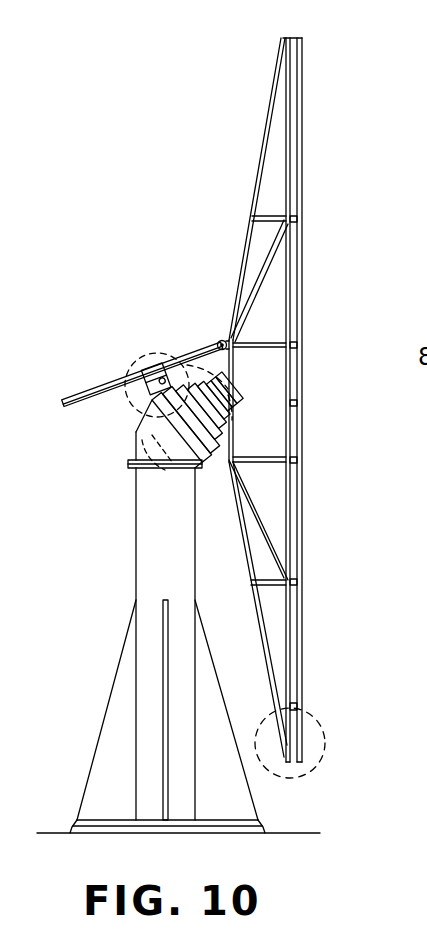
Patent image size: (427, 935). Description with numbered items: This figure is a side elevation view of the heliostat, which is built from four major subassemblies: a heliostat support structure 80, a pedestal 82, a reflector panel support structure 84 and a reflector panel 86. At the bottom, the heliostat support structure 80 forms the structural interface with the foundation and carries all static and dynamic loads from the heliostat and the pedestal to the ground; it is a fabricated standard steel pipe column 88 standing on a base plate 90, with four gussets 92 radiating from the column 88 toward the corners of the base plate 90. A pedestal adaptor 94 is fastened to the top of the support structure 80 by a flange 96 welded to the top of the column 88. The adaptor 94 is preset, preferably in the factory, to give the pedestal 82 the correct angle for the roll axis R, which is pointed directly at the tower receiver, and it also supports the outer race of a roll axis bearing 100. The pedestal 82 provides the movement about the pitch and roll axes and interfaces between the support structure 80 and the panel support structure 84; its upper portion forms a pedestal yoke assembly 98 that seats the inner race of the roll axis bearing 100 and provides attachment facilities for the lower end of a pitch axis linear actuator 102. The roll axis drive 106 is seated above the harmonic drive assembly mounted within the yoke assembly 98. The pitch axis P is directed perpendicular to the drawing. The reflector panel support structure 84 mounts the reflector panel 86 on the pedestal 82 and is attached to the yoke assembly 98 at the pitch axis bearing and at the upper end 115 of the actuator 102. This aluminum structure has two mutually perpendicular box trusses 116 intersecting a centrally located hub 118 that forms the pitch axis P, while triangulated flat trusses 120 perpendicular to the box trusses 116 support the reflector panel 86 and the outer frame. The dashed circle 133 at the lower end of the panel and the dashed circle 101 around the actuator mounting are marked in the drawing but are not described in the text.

The heliostat support structure 80 is at (148, 547).
The pedestal 82 is at (115, 418).
The reflector panel support structure 84 is at (268, 102).
The reflector panel 86 is at (303, 113).
The column 88 is at (134, 644).
The base plate 90 is at (72, 825).
The gussets 92 is at (103, 722).
The pedestal adaptor 94 is at (160, 459).
The flange 96 is at (128, 465).
The pedestal yoke assembly 98 is at (203, 447).
The roll axis bearing 100 is at (168, 468).
The clamp 101 is at (153, 352).
The pitch axis linear actuator 102 is at (118, 379).
The roll axis drive 106 is at (190, 376).
The upper end of pitch axis linear actuator 115 is at (222, 340).
The box trusses 116 is at (252, 195).
The hub 118 is at (240, 428).
The triangulated flat trusses 120 is at (276, 243).
The detail circle 133 is at (330, 747).
The pitch axis P is at (203, 407).
The roll axis R is at (150, 452).